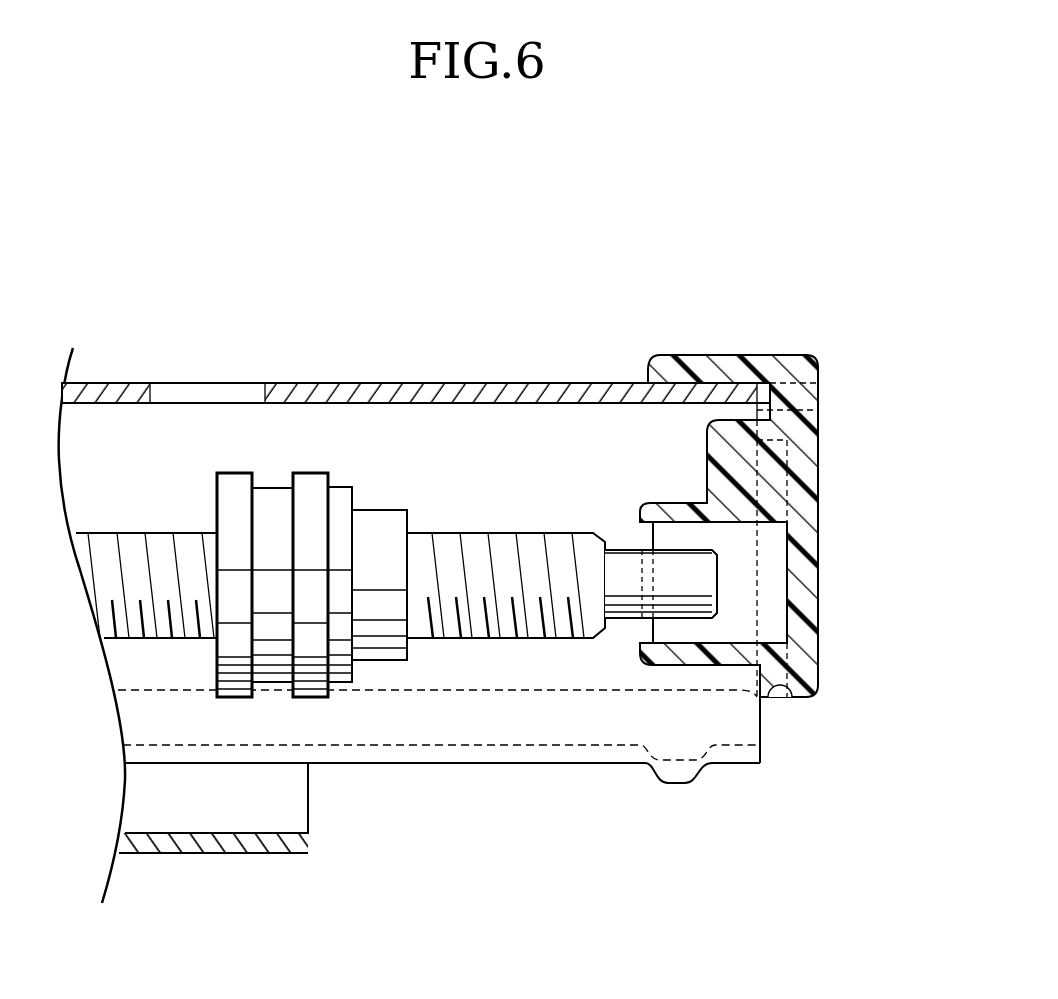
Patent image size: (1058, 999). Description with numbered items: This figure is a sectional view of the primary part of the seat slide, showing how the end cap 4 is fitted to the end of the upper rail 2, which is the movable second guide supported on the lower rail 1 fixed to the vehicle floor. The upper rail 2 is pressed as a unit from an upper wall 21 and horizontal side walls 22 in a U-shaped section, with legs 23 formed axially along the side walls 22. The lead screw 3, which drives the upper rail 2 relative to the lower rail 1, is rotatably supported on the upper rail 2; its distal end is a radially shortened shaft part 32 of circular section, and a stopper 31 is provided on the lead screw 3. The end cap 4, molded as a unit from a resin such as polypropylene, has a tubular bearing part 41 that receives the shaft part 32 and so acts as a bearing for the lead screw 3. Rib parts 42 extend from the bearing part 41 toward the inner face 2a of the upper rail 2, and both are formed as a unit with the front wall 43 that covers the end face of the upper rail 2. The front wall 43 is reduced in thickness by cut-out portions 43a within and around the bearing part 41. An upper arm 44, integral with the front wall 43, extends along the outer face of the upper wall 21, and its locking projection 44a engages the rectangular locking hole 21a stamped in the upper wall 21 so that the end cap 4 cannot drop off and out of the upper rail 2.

The lower rail 1 is at (201, 853).
The upper rail 2 is at (490, 382).
The inner face 2a is at (588, 403).
The upper wall 21 is at (557, 433).
The locking hole 21a is at (672, 383).
The side wall 22 is at (372, 428).
The leg 23 is at (408, 765).
The lead screw 3 is at (445, 531).
The stopper 31 is at (278, 487).
The shaft part 32 is at (625, 620).
The end cap 4 is at (826, 411).
The bearing part 41 is at (706, 666).
The rib part 42 is at (705, 440).
The front wall 43 is at (822, 527).
The cut-out portion 43a is at (772, 698).
The upper arm 44 is at (756, 372).
The locking projection 44a is at (702, 423).